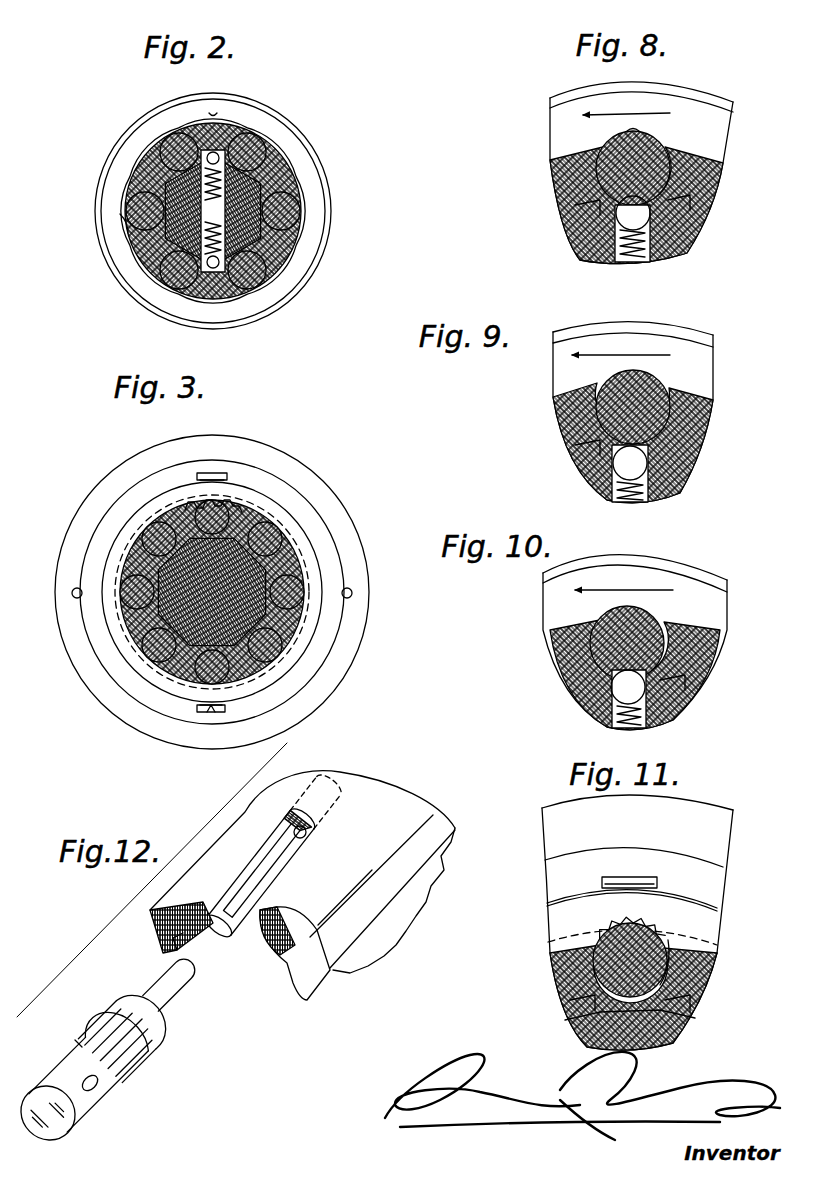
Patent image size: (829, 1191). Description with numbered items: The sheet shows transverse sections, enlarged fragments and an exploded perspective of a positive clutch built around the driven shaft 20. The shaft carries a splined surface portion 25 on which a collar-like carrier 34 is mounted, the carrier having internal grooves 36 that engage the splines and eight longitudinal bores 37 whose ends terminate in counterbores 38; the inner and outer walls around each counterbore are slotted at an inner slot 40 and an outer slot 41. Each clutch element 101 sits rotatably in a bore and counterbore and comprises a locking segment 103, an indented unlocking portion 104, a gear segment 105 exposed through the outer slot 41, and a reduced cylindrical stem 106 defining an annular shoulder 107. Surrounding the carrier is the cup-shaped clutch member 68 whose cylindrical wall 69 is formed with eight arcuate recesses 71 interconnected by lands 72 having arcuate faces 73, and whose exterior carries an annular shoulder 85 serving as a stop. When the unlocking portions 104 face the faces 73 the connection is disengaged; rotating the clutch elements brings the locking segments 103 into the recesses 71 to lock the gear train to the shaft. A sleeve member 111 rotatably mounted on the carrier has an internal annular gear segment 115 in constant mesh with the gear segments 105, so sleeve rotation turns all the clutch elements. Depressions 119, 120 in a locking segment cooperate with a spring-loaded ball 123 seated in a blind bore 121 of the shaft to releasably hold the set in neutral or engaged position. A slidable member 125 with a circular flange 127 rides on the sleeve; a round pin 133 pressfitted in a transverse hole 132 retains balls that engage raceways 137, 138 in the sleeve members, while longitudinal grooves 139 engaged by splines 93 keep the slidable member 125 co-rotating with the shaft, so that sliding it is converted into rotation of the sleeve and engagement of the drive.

In FIG. 2, the driven shaft 20 is at (171, 207).
In FIG. 3, the driven shaft 20 is at (203, 603).
In FIG. 8, the driven shaft 20 is at (577, 253).
In FIG. 9, the driven shaft 20 is at (664, 500).
In FIG. 10, the driven shaft 20 is at (607, 723).
In FIG. 11, the driven shaft 20 is at (673, 1045).
In FIG. 2, the splined surface portion 25 is at (297, 238).
In FIG. 3, the splined surface portion 25 is at (297, 553).
In FIG. 8, the splined surface portion 25 is at (637, 218).
In FIG. 9, the splined surface portion 25 is at (630, 463).
In FIG. 10, the splined surface portion 25 is at (622, 692).
In FIG. 11, the splined surface portion 25 is at (577, 1013).
In FIG. 2, the carrier 34 is at (137, 177).
In FIG. 3, the carrier 34 is at (253, 673).
In FIG. 8, the carrier 34 is at (661, 184).
In FIG. 9, the carrier 34 is at (703, 417).
In FIG. 10, the carrier 34 is at (698, 648).
In FIG. 11, the carrier 34 is at (557, 973).
In FIG. 12, the carrier 34 is at (150, 922).
In FIG. 2, the grooves 36 is at (280, 187).
In FIG. 3, the grooves 36 is at (170, 670).
In FIG. 8, the grooves 36 is at (580, 220).
In FIG. 9, the grooves 36 is at (677, 448).
In FIG. 10, the grooves 36 is at (667, 677).
In FIG. 11, the grooves 36 is at (593, 995).
In FIG. 12, the grooves 36 is at (290, 978).
In FIG. 12, the longitudinal bores 37 is at (332, 814).
In FIG. 2, the counterbores 38 is at (293, 175).
In FIG. 3, the counterbores 38 is at (193, 680).
In FIG. 8, the counterbores 38 is at (680, 195).
In FIG. 11, the counterbores 38 is at (667, 993).
In FIG. 12, the counterbores 38 is at (214, 934).
In FIG. 2, the inner slot 40 is at (213, 211).
In FIG. 3, the inner slot 40 is at (212, 592).
In FIG. 11, the inner slot 40 is at (660, 1017).
In FIG. 12, the inner slot 40 is at (236, 927).
In FIG. 2, the outer slot 41 is at (288, 258).
In FIG. 3, the outer slot 41 is at (127, 613).
In FIG. 11, the outer slot 41 is at (663, 933).
In FIG. 12, the outer slot 41 is at (272, 882).
In FIG. 2, the clutch member 68 is at (153, 123).
In FIG. 8, the clutch member 68 is at (588, 100).
In FIG. 9, the clutch member 68 is at (690, 322).
In FIG. 10, the clutch member 68 is at (540, 600).
In FIG. 2, the cylindrical wall 69 is at (178, 104).
In FIG. 8, the cylindrical wall 69 is at (672, 103).
In FIG. 2, the arcuate recesses 71 is at (217, 113).
In FIG. 8, the arcuate recesses 71 is at (633, 128).
In FIG. 2, the lands 72 is at (247, 135).
In FIG. 8, the lands 72 is at (558, 140).
In FIG. 2, the arcuate faces 73 is at (257, 133).
In FIG. 8, the arcuate faces 73 is at (670, 172).
In FIG. 2, the annular shoulder 85 is at (123, 139).
In FIG. 8, the annular shoulder 85 is at (717, 103).
In FIG. 9, the annular shoulder 85 is at (583, 333).
In FIG. 10, the annular shoulder 85 is at (635, 573).
In FIG. 12, the annular shoulder 85 is at (302, 872).
In FIG. 3, the splines 93 is at (220, 477).
In FIG. 11, the splines 93 is at (603, 888).
In FIG. 2, the clutch element 101 is at (163, 281).
In FIG. 3, the clutch element 101 is at (287, 653).
In FIG. 8, the clutch element 101 is at (623, 178).
In FIG. 11, the clutch element 101 is at (621, 978).
In FIG. 12, the clutch element 101 is at (107, 1090).
In FIG. 2, the locking segment 103 is at (140, 250).
In FIG. 8, the locking segment 103 is at (683, 180).
In FIG. 9, the locking segment 103 is at (603, 423).
In FIG. 10, the locking segment 103 is at (603, 638).
In FIG. 12, the locking segment 103 is at (85, 1100).
In FIG. 2, the unlocking portion 104 is at (160, 277).
In FIG. 8, the unlocking portion 104 is at (643, 150).
In FIG. 9, the unlocking portion 104 is at (617, 378).
In FIG. 10, the unlocking portion 104 is at (603, 657).
In FIG. 12, the unlocking portion 104 is at (80, 1042).
In FIG. 3, the gear segment 105 is at (253, 507).
In FIG. 11, the gear segment 105 is at (647, 993).
In FIG. 12, the gear segment 105 is at (110, 1013).
In FIG. 3, the cylindrical stem 106 is at (157, 530).
In FIG. 12, the cylindrical stem 106 is at (160, 988).
In FIG. 12, the annular shoulder 107 is at (153, 1030).
In FIG. 3, the sleeve member 111 is at (250, 493).
In FIG. 11, the sleeve member 111 is at (553, 933).
In FIG. 3, the internal annular gear segment 115 is at (220, 493).
In FIG. 11, the internal annular gear segment 115 is at (610, 925).
In FIG. 2, the depression 119 is at (257, 260).
In FIG. 8, the depression 119 is at (577, 193).
In FIG. 9, the depression 119 is at (657, 428).
In FIG. 10, the depression 119 is at (653, 617).
In FIG. 2, the depression 120 is at (128, 233).
In FIG. 8, the depression 120 is at (607, 153).
In FIG. 9, the depression 120 is at (597, 415).
In FIG. 10, the depression 120 is at (687, 710).
In FIG. 12, the depression 120 is at (100, 1077).
In FIG. 2, the blind bores 121 is at (186, 282).
In FIG. 8, the blind bores 121 is at (642, 258).
In FIG. 9, the blind bores 121 is at (636, 501).
In FIG. 10, the blind bores 121 is at (640, 723).
In FIG. 2, the spring-loaded ball 123 is at (247, 293).
In FIG. 8, the spring-loaded ball 123 is at (683, 253).
In FIG. 9, the spring-loaded ball 123 is at (683, 487).
In FIG. 10, the spring-loaded ball 123 is at (583, 713).
In FIG. 3, the slidable member 125 is at (95, 672).
In FIG. 11, the slidable member 125 is at (557, 803).
In FIG. 3, the circular flange 127 is at (98, 632).
In FIG. 11, the circular flange 127 is at (683, 813).
In FIG. 3, the transverse hole 132 is at (352, 593).
In FIG. 3, the round pin 133 is at (353, 600).
In FIG. 3, the raceway 137 is at (130, 560).
In FIG. 3, the raceway 138 is at (297, 627).
In FIG. 3, the longitudinal grooves 139 is at (207, 473).
In FIG. 11, the longitudinal grooves 139 is at (645, 877).